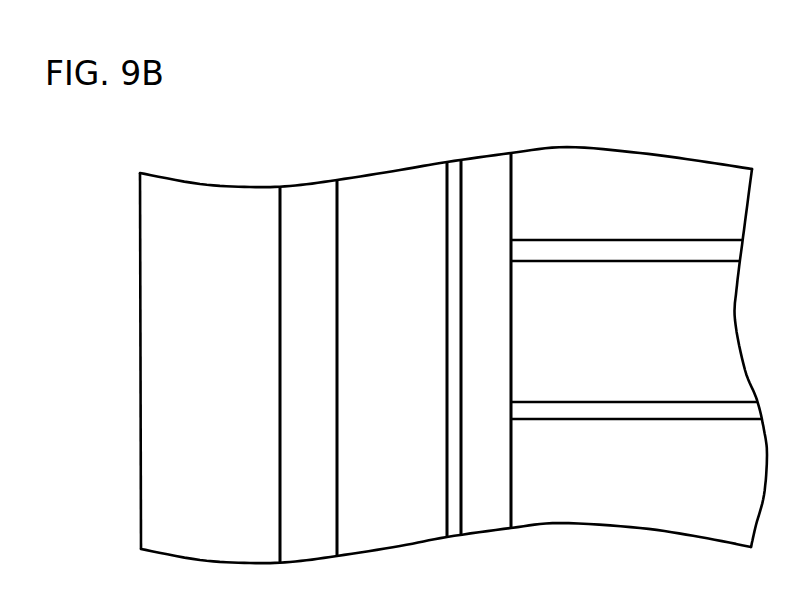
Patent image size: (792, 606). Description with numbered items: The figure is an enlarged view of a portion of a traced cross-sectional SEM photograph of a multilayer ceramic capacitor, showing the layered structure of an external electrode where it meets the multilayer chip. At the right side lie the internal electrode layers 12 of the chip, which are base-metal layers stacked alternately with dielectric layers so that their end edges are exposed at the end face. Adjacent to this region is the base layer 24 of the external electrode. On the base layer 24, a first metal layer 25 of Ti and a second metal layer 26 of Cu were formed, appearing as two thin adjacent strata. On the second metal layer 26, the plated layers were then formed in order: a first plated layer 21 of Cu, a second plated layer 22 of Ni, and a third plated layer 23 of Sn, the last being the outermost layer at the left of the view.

The internal electrode layer 12 is at (643, 249).
The first plated layer 21 is at (378, 197).
The second plated layer 22 is at (309, 202).
The third plated layer 23 is at (231, 203).
The base layer 24 is at (493, 182).
The first metal layer 25 is at (453, 168).
The second metal layer 26 is at (472, 278).